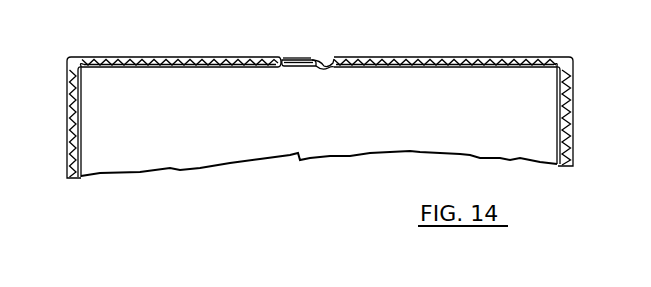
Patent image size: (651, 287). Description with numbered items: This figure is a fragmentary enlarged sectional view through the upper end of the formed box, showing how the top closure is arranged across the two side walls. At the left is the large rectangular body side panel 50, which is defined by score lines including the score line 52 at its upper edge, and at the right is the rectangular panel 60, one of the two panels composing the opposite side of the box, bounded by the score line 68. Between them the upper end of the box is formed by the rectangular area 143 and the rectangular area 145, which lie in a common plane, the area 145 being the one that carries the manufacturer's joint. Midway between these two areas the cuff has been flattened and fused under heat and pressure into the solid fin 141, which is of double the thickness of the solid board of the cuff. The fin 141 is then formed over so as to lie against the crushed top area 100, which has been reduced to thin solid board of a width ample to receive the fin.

The body side panel 50 is at (67, 112).
The score line 52 is at (68, 58).
The rectangular panel 60 is at (575, 127).
The score line 68 is at (574, 58).
The crushed top area 100 is at (306, 67).
The fin 141 is at (304, 60).
The rectangular area 143 is at (193, 58).
The rectangular area 145 is at (425, 58).